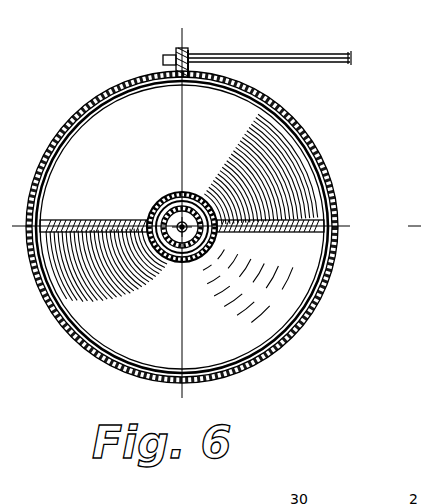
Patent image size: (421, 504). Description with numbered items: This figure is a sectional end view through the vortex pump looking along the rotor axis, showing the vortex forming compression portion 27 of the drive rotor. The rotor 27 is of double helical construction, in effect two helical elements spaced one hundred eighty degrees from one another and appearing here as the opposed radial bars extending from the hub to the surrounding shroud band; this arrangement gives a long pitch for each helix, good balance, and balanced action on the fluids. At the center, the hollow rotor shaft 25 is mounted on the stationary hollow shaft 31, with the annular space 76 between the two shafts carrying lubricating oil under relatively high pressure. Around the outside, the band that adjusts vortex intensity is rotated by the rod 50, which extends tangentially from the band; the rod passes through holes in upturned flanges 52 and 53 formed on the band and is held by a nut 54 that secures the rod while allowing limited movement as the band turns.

The shaft 25 is at (165, 205).
The vortex forming compression portion 27 is at (118, 219).
The stationary hollow shaft 31 is at (201, 203).
The rod 50 is at (328, 64).
The upturned flange 52 is at (189, 50).
The upturned flange 53 is at (180, 48).
The nut 54 is at (165, 56).
The annular space 76 is at (216, 243).